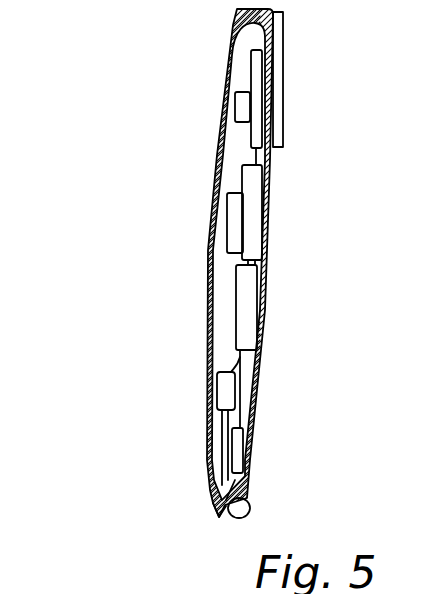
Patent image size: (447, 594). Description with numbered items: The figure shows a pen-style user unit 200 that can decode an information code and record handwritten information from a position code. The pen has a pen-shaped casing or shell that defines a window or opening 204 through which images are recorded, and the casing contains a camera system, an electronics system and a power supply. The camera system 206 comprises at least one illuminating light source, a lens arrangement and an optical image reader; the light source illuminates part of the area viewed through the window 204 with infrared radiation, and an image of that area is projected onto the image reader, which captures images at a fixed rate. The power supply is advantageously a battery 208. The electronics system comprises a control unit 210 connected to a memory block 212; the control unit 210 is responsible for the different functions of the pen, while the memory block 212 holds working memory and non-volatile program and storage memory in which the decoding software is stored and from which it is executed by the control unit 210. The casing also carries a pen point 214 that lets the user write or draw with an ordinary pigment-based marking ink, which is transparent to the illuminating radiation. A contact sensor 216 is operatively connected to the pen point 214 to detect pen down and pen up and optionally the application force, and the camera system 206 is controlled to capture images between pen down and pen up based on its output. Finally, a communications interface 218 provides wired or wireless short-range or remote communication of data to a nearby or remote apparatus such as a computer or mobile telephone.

The drug delivery device 200 is at (164, 70).
The window 204 is at (240, 498).
The camera system 206 is at (235, 445).
The battery 208 is at (268, 175).
The control unit 210 is at (252, 310).
The memory block 212 is at (253, 217).
The pen point 214 is at (218, 518).
The contact sensor 216 is at (221, 401).
The communications interface 218 is at (283, 92).